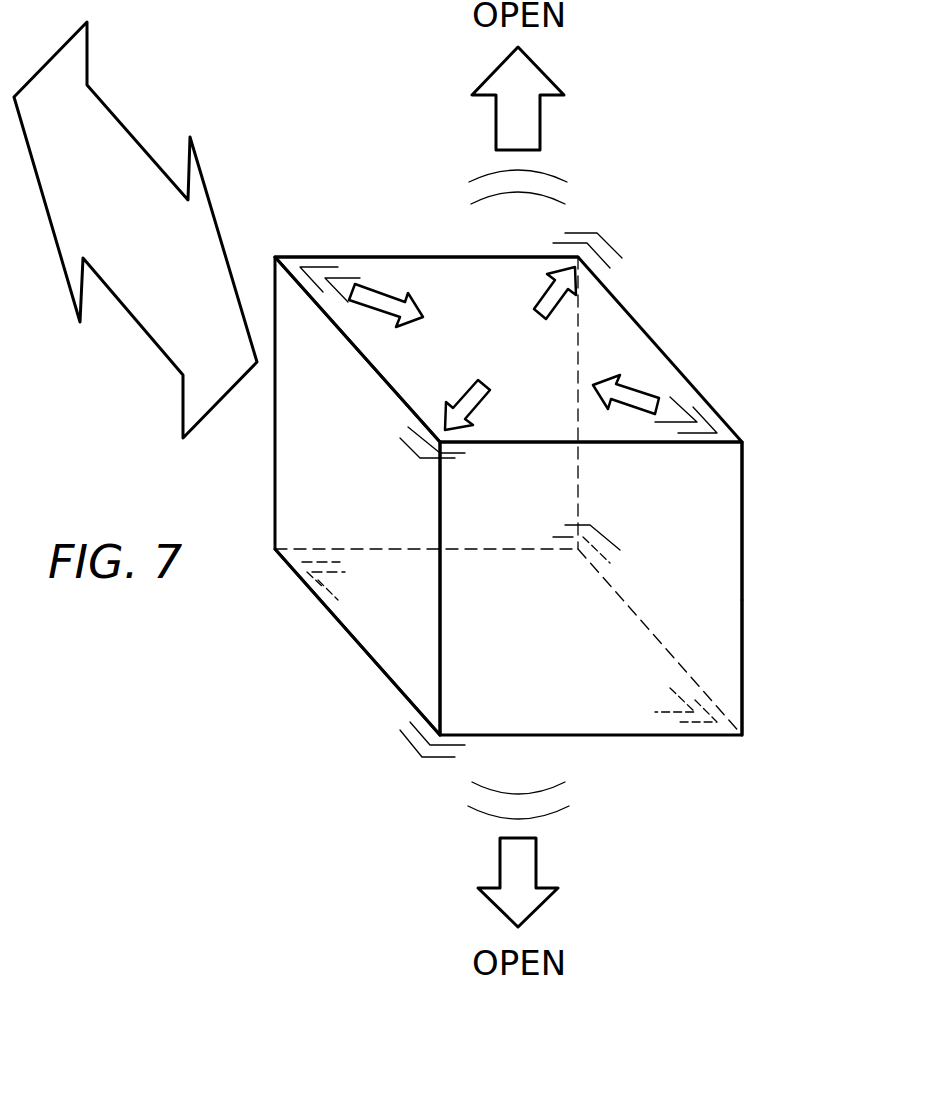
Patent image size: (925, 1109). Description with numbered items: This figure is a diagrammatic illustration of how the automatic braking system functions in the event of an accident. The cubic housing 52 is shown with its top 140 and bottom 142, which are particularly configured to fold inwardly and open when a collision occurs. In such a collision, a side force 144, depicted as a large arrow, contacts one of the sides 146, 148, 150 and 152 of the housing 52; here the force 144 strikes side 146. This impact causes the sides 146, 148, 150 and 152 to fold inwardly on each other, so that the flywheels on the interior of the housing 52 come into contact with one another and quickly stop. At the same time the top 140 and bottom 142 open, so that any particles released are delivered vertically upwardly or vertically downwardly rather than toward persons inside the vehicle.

The housing 52 is at (733, 592).
The top 140 is at (613, 320).
The bottom 142 is at (356, 642).
The side force 144 is at (210, 185).
The side 146 is at (297, 425).
The side 148 is at (443, 268).
The side 150 is at (745, 513).
The side 152 is at (725, 653).